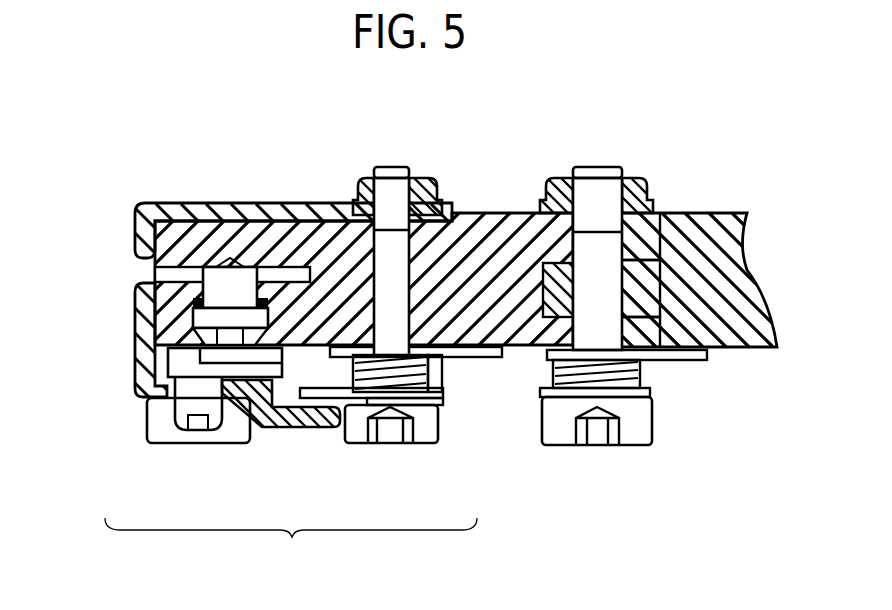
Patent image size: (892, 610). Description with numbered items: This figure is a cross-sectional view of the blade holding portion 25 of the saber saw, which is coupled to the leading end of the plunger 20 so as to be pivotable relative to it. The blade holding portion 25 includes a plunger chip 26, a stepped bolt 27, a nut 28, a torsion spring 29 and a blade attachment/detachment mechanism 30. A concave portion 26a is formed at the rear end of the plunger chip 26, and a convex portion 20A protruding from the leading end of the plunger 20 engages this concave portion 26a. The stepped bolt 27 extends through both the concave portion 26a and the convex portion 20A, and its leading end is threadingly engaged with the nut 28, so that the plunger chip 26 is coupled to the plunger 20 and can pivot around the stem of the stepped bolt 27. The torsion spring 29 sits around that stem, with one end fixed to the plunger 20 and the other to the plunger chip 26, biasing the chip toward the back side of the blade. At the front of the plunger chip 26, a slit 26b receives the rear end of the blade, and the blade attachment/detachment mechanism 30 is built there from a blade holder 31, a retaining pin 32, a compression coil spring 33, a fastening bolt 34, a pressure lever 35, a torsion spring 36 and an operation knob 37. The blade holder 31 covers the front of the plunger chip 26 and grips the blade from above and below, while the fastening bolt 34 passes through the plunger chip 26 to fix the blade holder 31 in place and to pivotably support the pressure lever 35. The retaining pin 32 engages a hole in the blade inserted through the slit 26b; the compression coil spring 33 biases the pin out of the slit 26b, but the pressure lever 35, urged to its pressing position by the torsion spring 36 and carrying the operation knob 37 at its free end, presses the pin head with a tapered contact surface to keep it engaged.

The plunger 20 is at (720, 264).
The convex portion 20A is at (643, 290).
The blade holding portion 25 is at (469, 148).
The plunger chip 26 is at (483, 243).
The concave portion 26a is at (541, 268).
The slit 26b is at (177, 273).
The stepped bolt 27 is at (640, 425).
The nut 28 is at (637, 180).
The torsion spring 29 is at (643, 377).
The blade attachment/detachment mechanism 30 is at (291, 544).
The blade holder 31 is at (143, 352).
The retaining pin 32 is at (233, 293).
The compression coil spring 33 is at (160, 343).
The fastening bolt 34 is at (390, 443).
The pressure lever 35 is at (305, 418).
The torsion spring 36 is at (433, 372).
The operation knob 37 is at (230, 433).